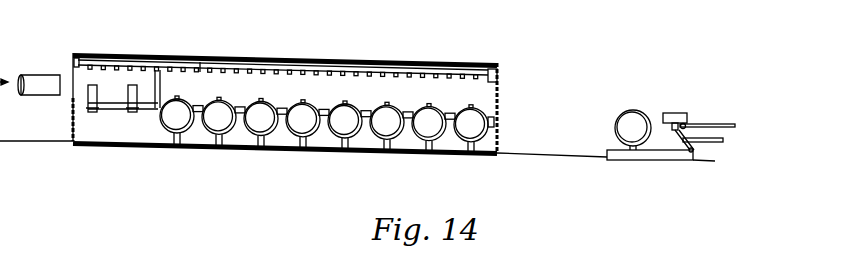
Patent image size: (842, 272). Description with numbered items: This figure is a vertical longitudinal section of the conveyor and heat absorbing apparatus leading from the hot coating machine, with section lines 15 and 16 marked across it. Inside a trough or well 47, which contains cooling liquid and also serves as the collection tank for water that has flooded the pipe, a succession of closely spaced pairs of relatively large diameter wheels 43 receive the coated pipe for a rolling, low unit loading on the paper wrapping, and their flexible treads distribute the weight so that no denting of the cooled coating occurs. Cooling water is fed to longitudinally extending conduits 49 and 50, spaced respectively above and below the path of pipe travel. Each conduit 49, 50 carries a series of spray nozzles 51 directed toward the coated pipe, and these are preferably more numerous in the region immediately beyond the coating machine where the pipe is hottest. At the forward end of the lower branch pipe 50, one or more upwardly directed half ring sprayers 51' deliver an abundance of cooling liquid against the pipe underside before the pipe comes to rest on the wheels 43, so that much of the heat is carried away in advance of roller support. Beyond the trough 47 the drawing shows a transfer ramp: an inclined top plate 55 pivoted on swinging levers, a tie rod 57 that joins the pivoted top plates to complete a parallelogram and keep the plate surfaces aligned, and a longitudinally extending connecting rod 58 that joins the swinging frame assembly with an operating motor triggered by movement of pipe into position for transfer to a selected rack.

The section line 15- 15 is at (158, 3).
The section line 16- 16 is at (604, 15).
The wheels 43 is at (182, 127).
The trough 47 is at (499, 140).
The upper conduit 49 is at (204, 68).
The lower conduit 50 is at (243, 104).
The spray nozzles 51 is at (271, 63).
The half ring sprayers 51' is at (86, 103).
The inclined top plate 55 is at (675, 113).
The tie rod 57 is at (720, 125).
The connecting rod 58 is at (715, 145).